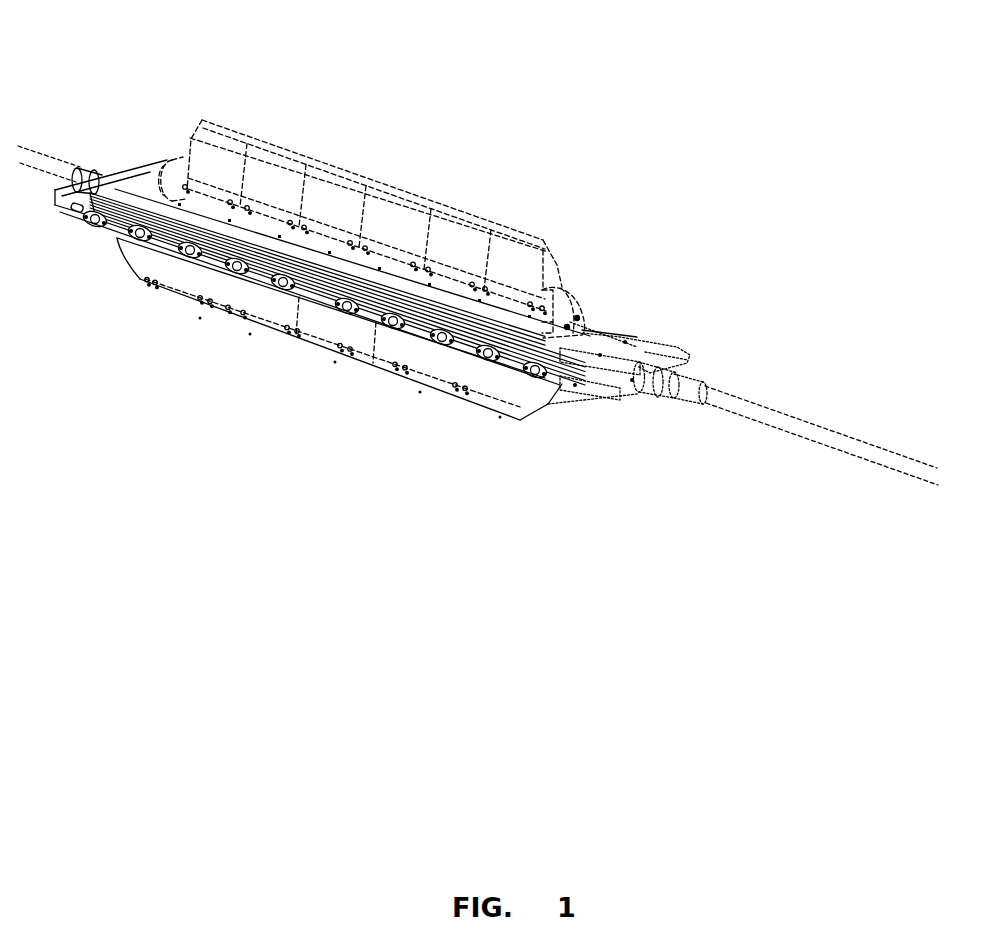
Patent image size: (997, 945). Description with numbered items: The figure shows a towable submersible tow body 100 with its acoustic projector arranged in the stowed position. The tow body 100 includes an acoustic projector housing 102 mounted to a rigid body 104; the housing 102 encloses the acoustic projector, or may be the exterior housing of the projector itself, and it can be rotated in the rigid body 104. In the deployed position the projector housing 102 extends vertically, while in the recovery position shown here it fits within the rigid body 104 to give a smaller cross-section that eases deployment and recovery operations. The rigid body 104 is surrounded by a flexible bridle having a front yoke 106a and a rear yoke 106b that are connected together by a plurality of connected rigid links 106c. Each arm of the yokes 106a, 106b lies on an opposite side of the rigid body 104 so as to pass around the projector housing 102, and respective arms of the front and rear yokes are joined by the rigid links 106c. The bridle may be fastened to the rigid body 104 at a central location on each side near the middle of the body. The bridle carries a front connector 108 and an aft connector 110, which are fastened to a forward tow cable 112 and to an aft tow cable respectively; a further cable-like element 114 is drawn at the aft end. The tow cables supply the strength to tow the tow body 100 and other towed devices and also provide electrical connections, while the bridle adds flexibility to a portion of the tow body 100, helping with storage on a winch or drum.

The tow body 100 is at (483, 110).
The acoustic projector housing 102 is at (278, 172).
The rigid body 104 is at (478, 373).
The front yoke 106a is at (663, 348).
The rear yoke 106b is at (80, 218).
The rigid links 106c is at (412, 333).
The front connector 108 is at (647, 390).
The aft connector 110 is at (104, 177).
The forward tow cable 112 is at (833, 435).
The cable 114 is at (42, 157).